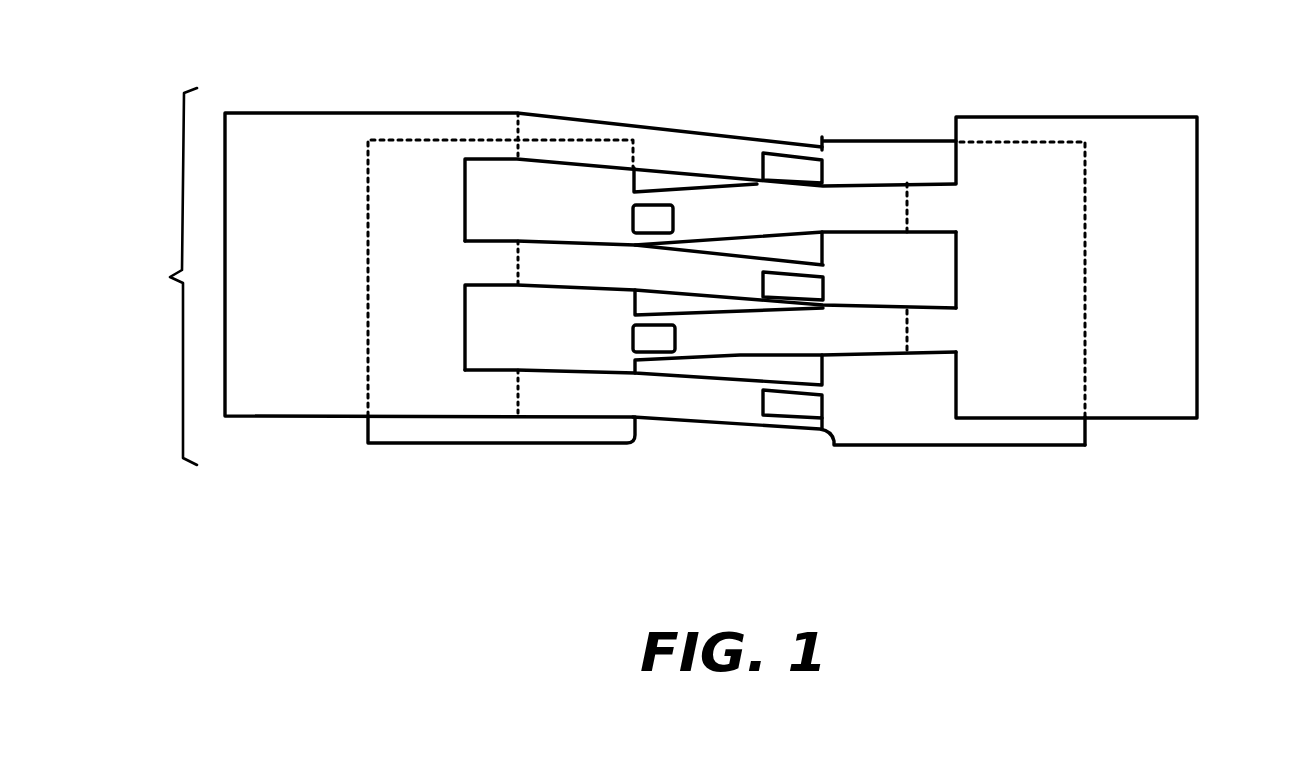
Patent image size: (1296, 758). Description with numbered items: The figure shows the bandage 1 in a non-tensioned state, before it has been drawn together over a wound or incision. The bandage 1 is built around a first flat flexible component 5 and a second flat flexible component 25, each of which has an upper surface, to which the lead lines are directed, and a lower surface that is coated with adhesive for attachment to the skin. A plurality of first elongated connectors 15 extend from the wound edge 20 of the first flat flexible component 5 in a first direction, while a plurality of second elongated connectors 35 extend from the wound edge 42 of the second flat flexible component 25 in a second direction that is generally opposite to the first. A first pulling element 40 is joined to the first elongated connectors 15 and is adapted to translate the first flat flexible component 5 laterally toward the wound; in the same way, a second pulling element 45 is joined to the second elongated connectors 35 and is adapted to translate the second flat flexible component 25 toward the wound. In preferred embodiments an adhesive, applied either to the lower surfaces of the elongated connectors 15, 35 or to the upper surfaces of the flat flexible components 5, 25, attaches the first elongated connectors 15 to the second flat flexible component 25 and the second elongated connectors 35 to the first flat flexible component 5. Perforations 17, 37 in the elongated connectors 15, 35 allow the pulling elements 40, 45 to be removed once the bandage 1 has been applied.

The bandage 1 is at (170, 277).
The first flat flexible component 5 is at (555, 357).
The first elongated connectors 15 is at (742, 338).
The perforations 17 is at (907, 329).
The wound edge 20 is at (636, 180).
The second flat flexible component 25 is at (925, 418).
The second elongated connectors 35 is at (577, 267).
The perforations 37 is at (518, 265).
The first pulling element 40 is at (1172, 193).
The wound edge 42 is at (820, 248).
The second pulling element 45 is at (298, 153).